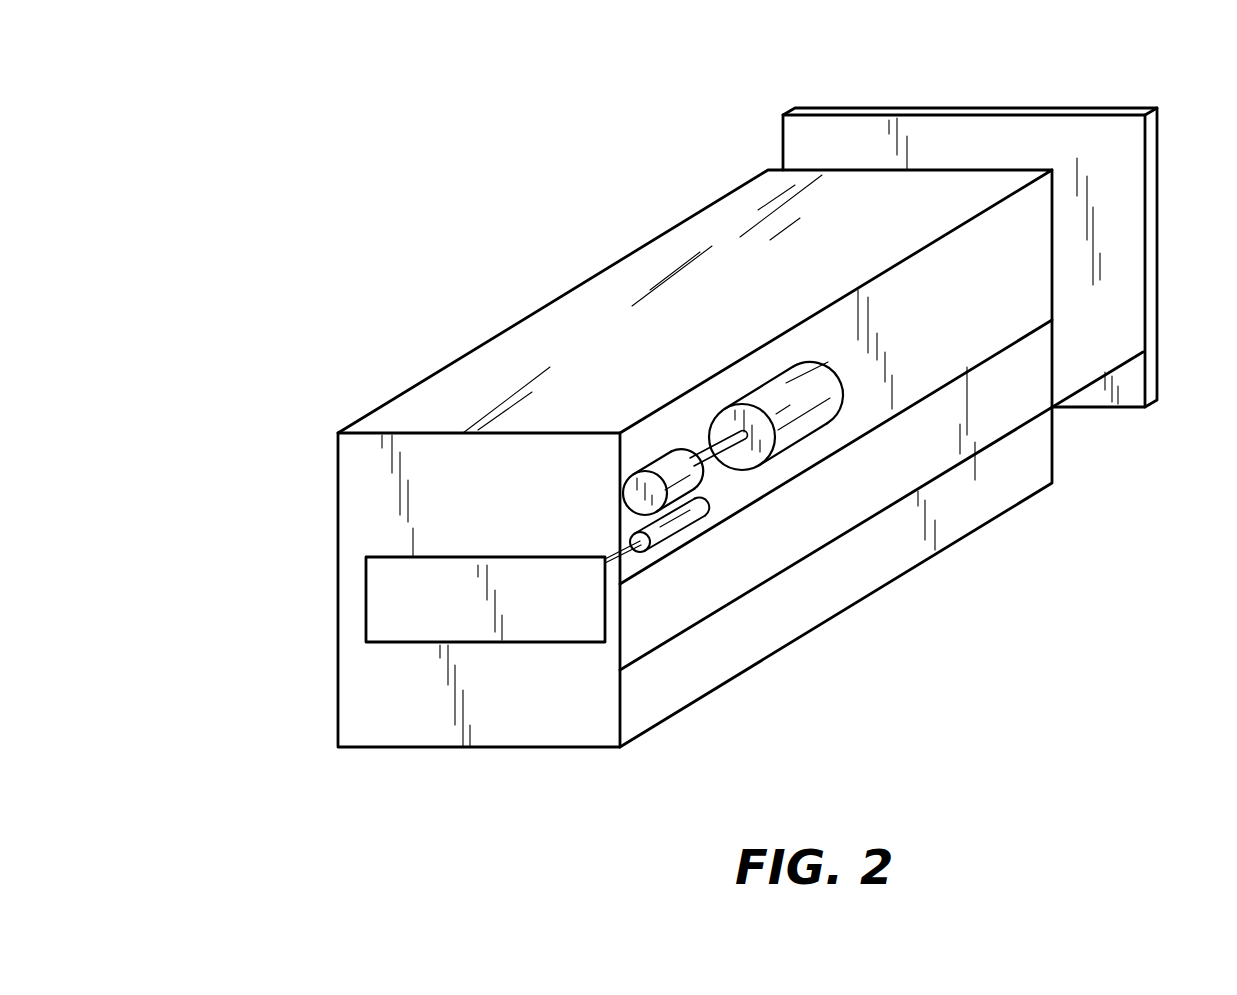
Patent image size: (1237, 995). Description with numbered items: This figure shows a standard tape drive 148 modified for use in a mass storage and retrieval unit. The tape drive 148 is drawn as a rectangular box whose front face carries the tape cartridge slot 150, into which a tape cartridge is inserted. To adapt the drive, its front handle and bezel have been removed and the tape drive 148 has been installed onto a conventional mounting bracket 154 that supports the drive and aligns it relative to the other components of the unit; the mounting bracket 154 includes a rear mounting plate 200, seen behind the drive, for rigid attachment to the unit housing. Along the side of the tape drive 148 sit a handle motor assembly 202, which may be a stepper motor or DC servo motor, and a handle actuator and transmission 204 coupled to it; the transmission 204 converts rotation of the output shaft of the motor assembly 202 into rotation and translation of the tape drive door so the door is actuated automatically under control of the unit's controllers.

The tape drive 148 is at (410, 403).
The tape cartridge slot 150 is at (375, 600).
The mounting bracket 154 is at (1018, 403).
The rear mounting plate 200 is at (1127, 113).
The handle motor assembly 202 is at (757, 400).
The handle actuator and transmission 204 is at (664, 460).